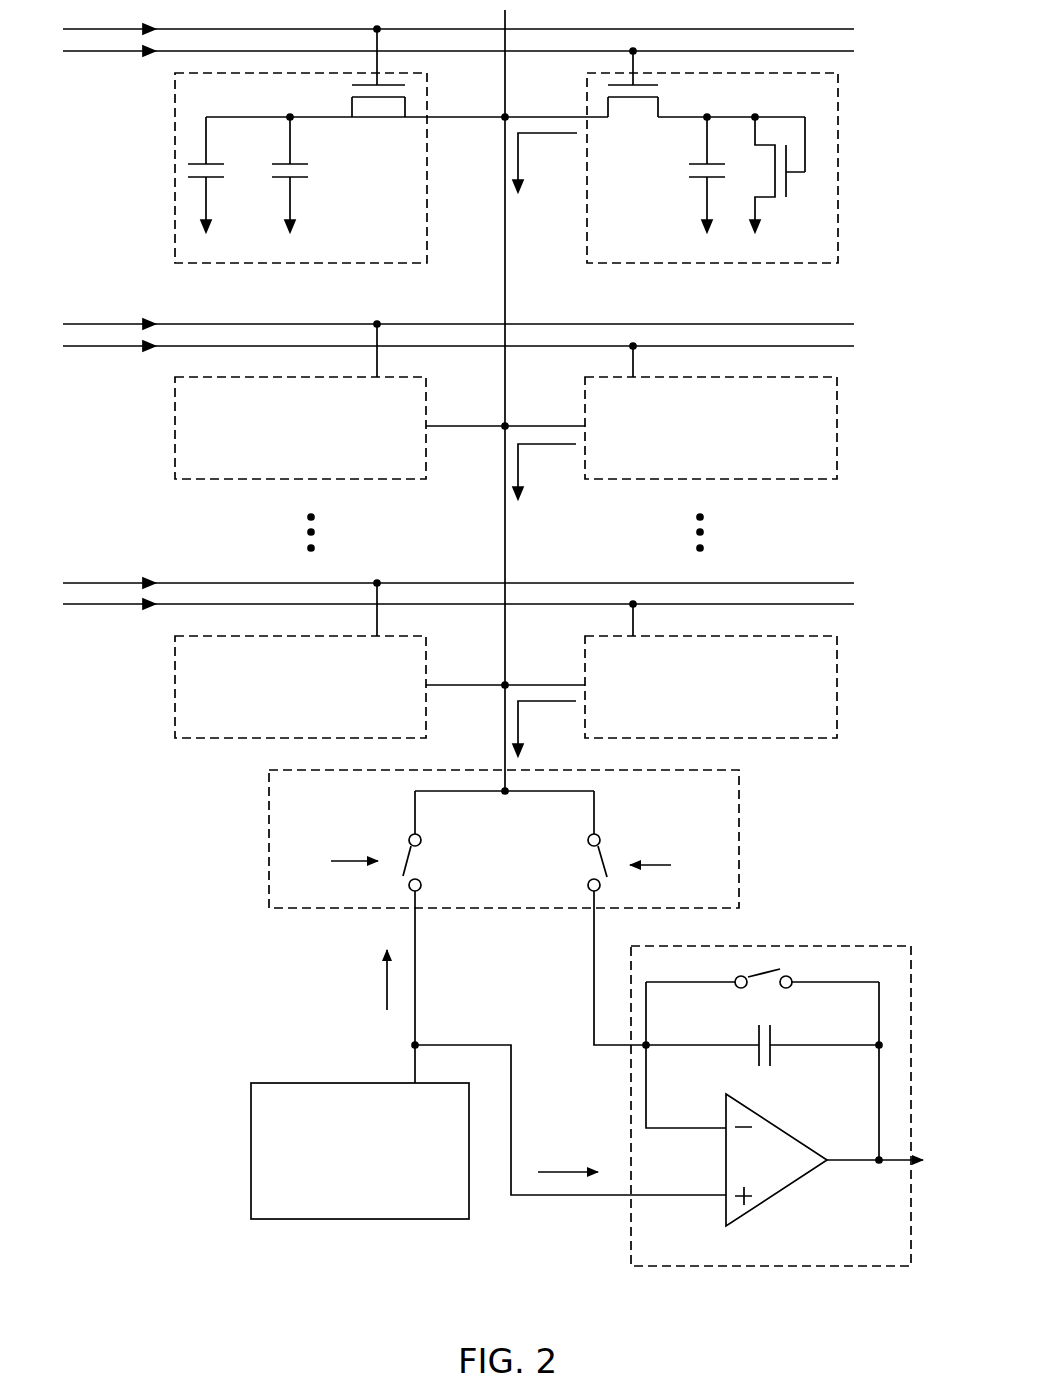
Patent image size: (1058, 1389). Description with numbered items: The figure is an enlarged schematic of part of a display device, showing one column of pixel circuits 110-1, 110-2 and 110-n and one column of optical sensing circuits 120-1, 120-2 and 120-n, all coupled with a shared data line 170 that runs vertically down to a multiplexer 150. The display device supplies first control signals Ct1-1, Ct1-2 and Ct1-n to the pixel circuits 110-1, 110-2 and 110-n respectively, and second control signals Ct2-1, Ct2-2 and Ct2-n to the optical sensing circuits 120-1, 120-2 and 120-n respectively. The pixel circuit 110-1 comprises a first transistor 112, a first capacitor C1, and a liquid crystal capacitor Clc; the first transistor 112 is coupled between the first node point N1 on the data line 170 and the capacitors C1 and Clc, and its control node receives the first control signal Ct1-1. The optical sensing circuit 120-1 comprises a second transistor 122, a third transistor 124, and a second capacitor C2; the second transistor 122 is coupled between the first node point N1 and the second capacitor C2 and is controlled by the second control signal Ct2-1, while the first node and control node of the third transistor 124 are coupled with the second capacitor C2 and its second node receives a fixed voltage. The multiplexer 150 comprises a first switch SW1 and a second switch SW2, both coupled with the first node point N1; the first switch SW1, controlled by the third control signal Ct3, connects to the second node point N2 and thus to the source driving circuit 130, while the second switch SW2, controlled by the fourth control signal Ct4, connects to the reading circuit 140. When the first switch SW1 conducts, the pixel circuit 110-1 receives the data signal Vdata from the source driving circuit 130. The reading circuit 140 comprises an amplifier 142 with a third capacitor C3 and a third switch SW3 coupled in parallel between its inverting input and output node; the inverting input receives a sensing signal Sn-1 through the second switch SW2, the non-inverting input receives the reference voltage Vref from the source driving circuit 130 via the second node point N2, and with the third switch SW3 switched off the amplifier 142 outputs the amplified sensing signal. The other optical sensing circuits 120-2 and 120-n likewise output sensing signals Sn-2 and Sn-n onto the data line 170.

The pixel circuit 110-1 is at (286, 146).
The first transistor 112 is at (375, 99).
The liquid crystal capacitor Clc is at (214, 178).
The first capacitor C1 is at (298, 178).
The optical sensing circuit 120-1 is at (726, 157).
The second transistor 122 is at (633, 99).
The second capacitor C2 is at (697, 178).
The third transistor 124 is at (765, 198).
The data line 170 is at (505, 297).
The first node point N1 is at (488, 103).
The pixel circuit 110-2 is at (175, 426).
The optical sensing circuit 120-2 is at (838, 426).
The pixel circuit 110-n is at (175, 685).
The optical sensing circuit 120-n is at (838, 685).
The multiplexer 150 is at (460, 839).
The first switch SW1 is at (409, 838).
The second switch SW2 is at (600, 836).
The third control signal Ct3 is at (334, 863).
The fourth control signal Ct4 is at (672, 864).
The second node point N2 is at (398, 1053).
The data signal Vdata is at (351, 980).
The reference voltage Vref is at (568, 1155).
The source driving circuit 130 is at (251, 1150).
The reading circuit 140 is at (777, 1082).
The third switch SW3 is at (791, 988).
The third capacitor C3 is at (773, 1055).
The amplifier 142 is at (780, 1193).
The first control signal Ct1-1 is at (457, 17).
The second control signal Ct2-1 is at (457, 63).
The first control signal Ct1-2 is at (457, 312).
The second control signal Ct2-2 is at (457, 358).
The first control signal Ct1-n is at (457, 571).
The second control signal Ct2-n is at (457, 617).
The sensing signal Sn-1 is at (545, 162).
The sensing signal Sn-2 is at (544, 471).
The sensing signal Sn-n is at (544, 728).